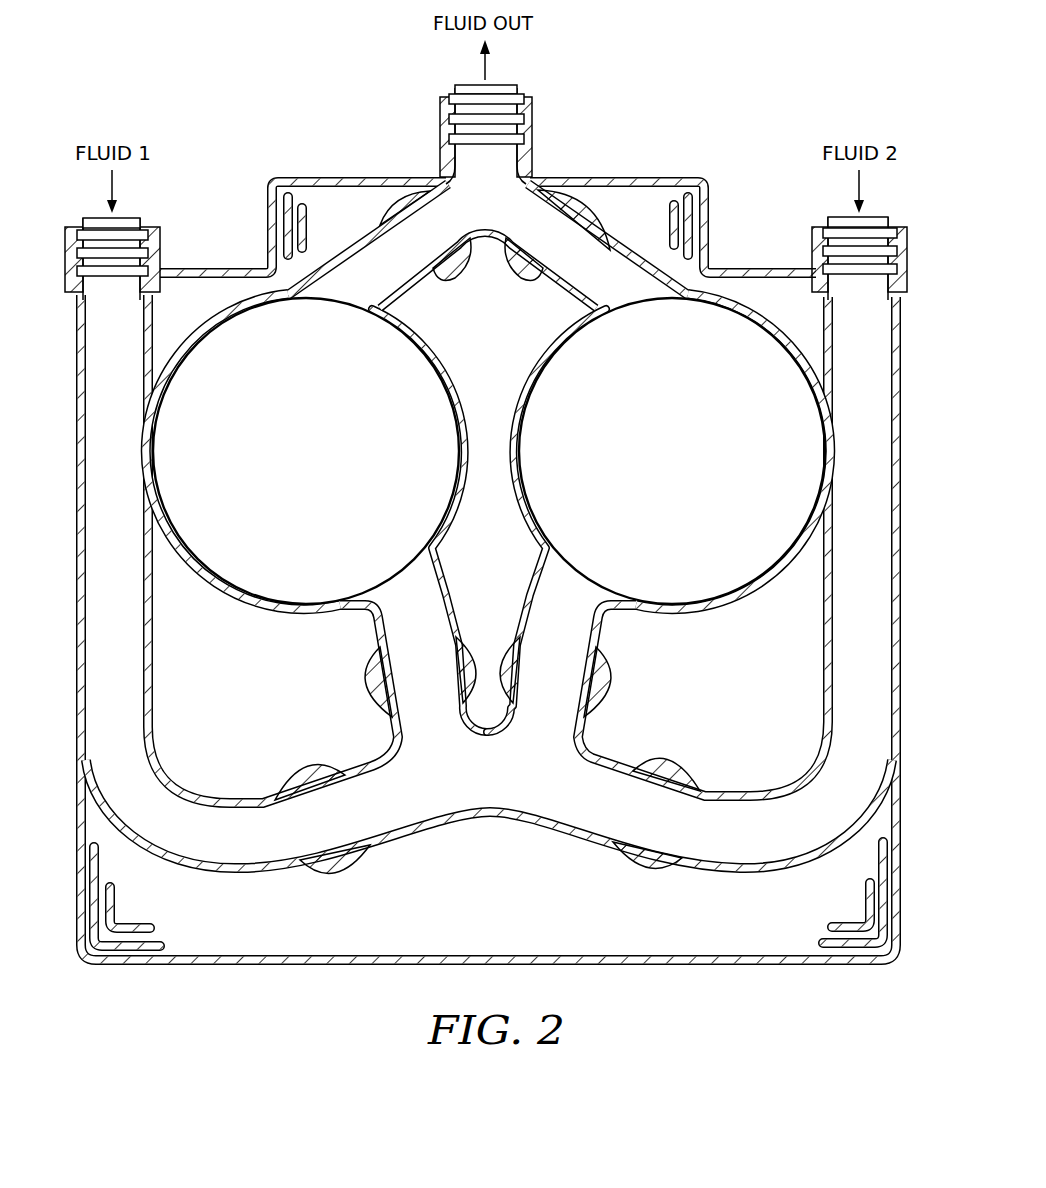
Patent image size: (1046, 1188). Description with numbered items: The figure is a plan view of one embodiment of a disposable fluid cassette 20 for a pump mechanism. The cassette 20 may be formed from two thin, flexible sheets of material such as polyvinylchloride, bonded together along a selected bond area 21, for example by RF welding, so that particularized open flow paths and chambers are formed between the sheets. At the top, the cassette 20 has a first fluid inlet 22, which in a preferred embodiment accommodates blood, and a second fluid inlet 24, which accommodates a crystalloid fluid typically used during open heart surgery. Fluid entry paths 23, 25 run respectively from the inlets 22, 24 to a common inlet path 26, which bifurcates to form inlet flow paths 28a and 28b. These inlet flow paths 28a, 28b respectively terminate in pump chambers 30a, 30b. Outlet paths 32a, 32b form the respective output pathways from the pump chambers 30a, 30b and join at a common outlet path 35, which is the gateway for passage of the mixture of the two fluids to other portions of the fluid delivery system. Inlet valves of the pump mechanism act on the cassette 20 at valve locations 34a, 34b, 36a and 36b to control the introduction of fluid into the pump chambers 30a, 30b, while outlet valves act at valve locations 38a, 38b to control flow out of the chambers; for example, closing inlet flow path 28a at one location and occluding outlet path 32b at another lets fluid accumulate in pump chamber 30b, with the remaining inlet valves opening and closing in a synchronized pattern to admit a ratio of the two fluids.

The disposable fluid cassette 20 is at (902, 817).
The bond area 21 is at (893, 357).
The first fluid inlet 22 is at (138, 218).
The fluid entry path 23 is at (120, 343).
The second fluid inlet 24 is at (885, 218).
The fluid entry path 25 is at (873, 417).
The common inlet path 26 is at (495, 783).
The inlet flow path 28a is at (413, 597).
The inlet flow path 28b is at (570, 630).
The pump chamber 30a is at (322, 467).
The pump chamber 30b is at (691, 467).
The outlet path 32a is at (377, 262).
The outlet path 32b is at (593, 263).
The valve location 34a is at (320, 813).
The valve location 34b is at (658, 820).
The common outlet path 35 is at (473, 177).
The valve location 36a is at (417, 690).
The valve location 36b is at (563, 670).
The valve location 38a is at (423, 246).
The valve location 38b is at (545, 243).